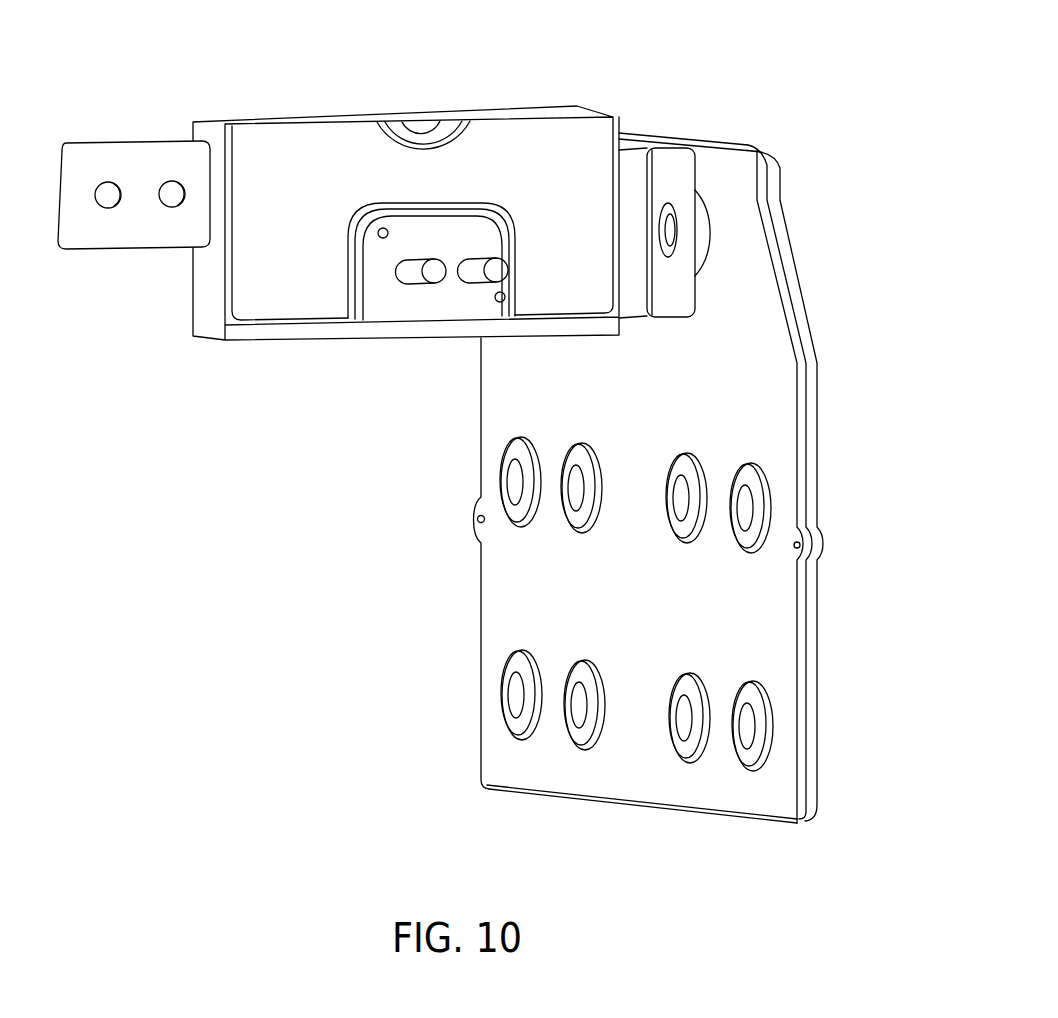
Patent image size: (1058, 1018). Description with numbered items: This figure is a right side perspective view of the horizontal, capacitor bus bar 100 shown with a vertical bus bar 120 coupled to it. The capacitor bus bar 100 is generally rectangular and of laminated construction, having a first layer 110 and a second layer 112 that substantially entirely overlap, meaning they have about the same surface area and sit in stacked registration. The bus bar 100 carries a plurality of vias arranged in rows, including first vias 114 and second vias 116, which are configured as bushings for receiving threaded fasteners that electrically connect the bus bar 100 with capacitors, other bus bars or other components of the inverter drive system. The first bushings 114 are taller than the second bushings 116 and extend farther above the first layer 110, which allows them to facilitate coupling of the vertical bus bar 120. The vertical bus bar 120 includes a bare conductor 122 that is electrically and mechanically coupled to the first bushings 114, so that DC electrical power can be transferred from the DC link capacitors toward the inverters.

The capacitor bus bar 100 is at (762, 57).
The first layer 110 is at (492, 615).
The second layer 112 is at (812, 674).
The first vias 114 is at (700, 222).
The second vias 116 is at (500, 480).
The vertical bus bar 120 is at (324, 90).
The bare conductor 122 is at (666, 158).